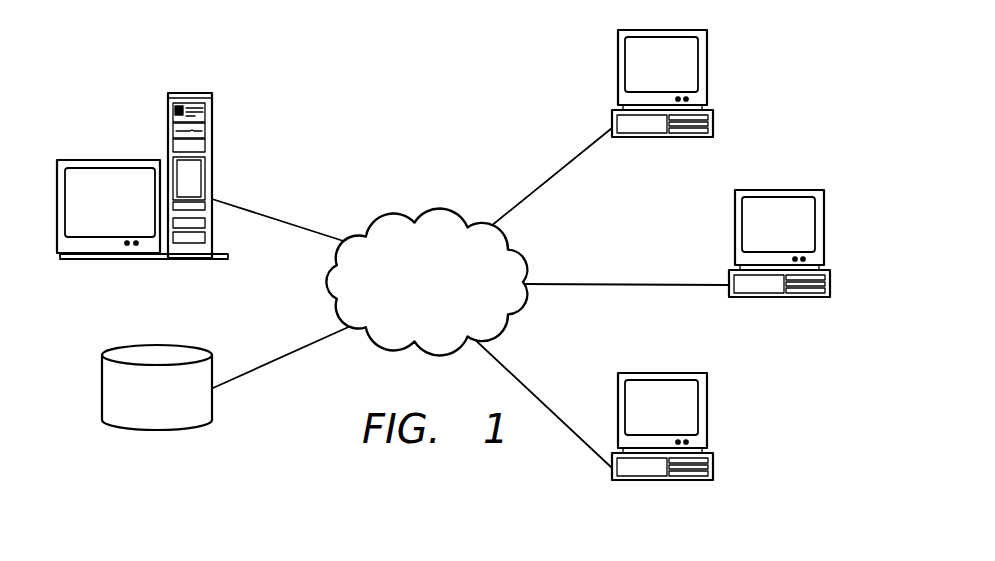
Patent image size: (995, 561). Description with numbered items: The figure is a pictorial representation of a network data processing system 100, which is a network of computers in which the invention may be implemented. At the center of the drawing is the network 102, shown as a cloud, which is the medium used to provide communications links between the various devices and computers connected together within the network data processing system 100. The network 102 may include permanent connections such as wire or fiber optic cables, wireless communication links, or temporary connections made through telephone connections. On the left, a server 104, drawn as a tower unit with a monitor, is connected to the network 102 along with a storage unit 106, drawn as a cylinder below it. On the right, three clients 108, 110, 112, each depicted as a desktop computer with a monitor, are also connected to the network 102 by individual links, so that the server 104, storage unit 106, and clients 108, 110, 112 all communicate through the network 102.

The network data processing system 100 is at (305, 78).
The network 102 is at (409, 312).
The server 104 is at (168, 113).
The storage unit 106 is at (102, 387).
The client 108 is at (707, 77).
The client 110 is at (824, 232).
The client 112 is at (707, 413).